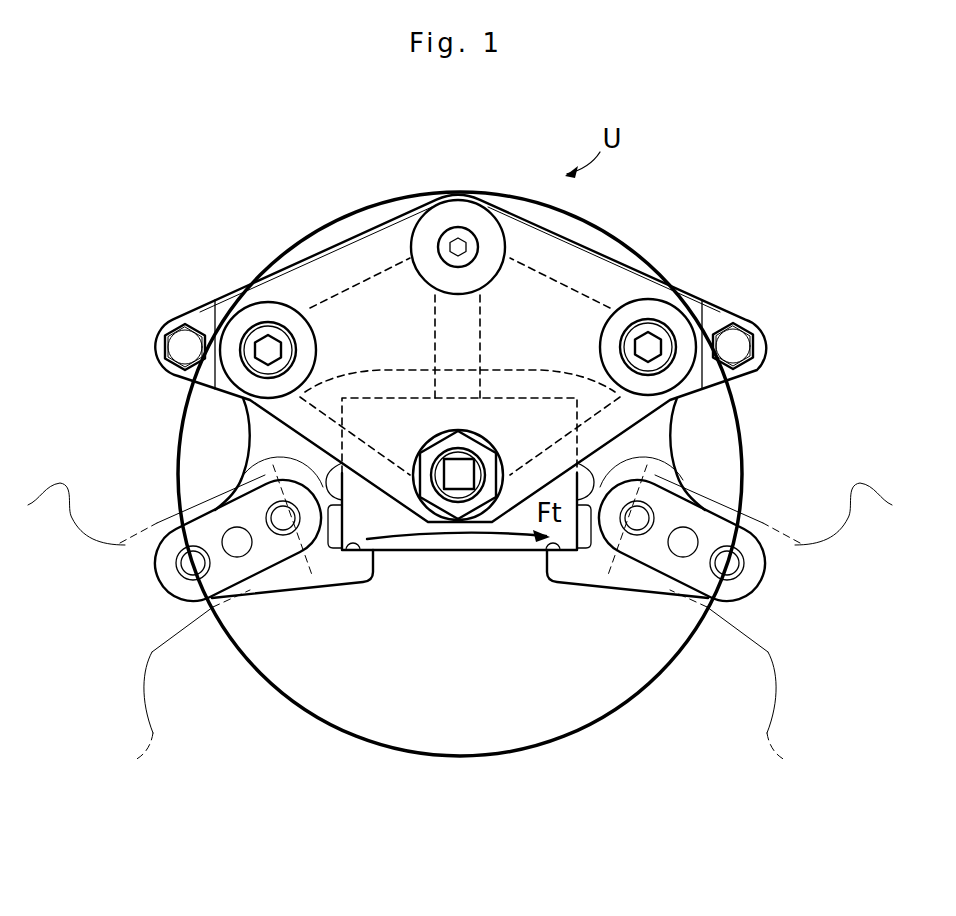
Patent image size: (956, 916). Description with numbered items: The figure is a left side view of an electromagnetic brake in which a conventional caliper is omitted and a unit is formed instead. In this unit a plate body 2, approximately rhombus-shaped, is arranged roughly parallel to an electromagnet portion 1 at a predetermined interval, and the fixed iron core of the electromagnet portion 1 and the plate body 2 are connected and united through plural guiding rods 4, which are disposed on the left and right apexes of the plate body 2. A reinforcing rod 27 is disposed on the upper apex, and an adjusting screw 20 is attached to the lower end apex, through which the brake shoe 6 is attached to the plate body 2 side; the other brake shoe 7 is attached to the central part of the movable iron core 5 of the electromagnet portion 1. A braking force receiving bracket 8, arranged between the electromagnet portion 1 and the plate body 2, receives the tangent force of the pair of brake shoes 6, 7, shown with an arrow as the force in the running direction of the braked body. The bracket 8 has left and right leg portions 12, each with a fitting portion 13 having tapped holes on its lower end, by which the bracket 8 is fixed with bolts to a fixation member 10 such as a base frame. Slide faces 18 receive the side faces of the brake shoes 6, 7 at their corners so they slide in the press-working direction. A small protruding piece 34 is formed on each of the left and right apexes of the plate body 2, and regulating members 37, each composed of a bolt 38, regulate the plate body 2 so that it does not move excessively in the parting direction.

The electromagnet portion 1 is at (370, 742).
The plate body 2 is at (530, 292).
The guiding rods 4 is at (266, 348).
The movable iron core 5 is at (533, 680).
The brake shoe 6 is at (407, 550).
The brake shoe 7 is at (459, 435).
The braking force receiving bracket 8 is at (672, 442).
The fixation member 10 is at (123, 542).
The leg portions 12 is at (273, 447).
The fitting portion 13 is at (165, 592).
The slide faces 18 is at (352, 552).
The adjusting screw 20 is at (462, 472).
The reinforcing rod 27 is at (460, 246).
The small protruding piece 34 is at (184, 346).
The regulating members 37 is at (183, 345).
The bolt 38 is at (459, 346).